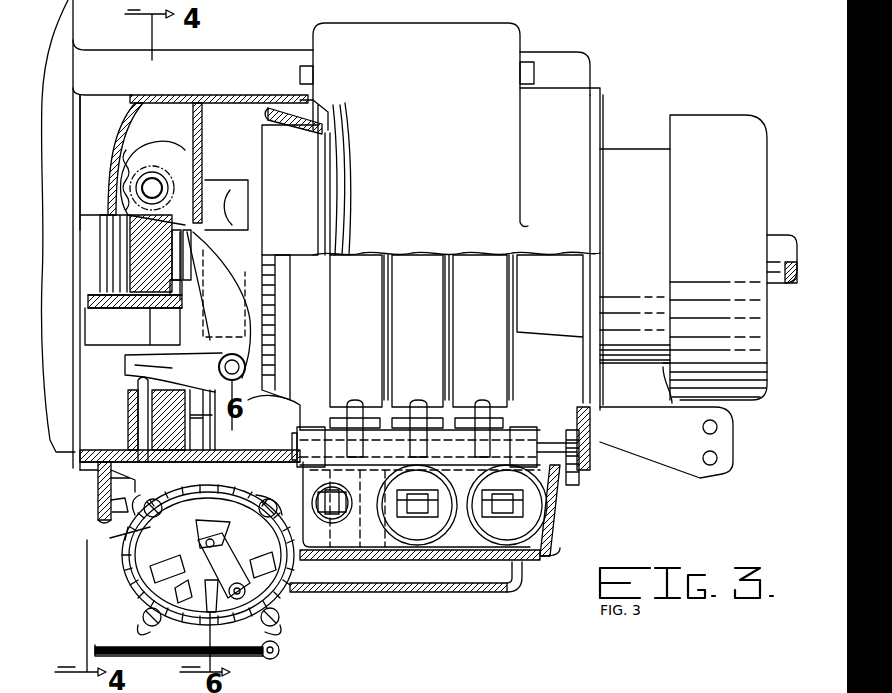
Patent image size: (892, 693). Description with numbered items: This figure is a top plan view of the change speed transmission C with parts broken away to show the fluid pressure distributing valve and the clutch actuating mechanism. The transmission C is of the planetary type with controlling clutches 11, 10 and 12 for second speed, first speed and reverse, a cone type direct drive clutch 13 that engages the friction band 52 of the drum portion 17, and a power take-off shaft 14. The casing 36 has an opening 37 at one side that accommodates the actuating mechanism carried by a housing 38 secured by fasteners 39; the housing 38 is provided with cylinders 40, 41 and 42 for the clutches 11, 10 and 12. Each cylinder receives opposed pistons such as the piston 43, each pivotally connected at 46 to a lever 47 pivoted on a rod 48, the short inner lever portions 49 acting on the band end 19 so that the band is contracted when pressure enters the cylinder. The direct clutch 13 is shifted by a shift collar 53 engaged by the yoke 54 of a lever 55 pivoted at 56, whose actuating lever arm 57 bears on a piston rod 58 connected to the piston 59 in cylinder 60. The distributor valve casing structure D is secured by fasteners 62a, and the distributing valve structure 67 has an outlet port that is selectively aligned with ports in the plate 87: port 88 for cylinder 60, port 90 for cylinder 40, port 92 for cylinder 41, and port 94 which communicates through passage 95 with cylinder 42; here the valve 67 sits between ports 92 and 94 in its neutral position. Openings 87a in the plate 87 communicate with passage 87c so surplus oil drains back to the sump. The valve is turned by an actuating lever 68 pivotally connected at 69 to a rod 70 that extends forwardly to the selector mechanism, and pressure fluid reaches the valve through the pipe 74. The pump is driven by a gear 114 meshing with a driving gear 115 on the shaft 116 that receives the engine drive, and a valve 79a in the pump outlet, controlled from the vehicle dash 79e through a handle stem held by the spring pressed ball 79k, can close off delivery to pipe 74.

The casing 36 is at (432, 45).
The change speed transmission C is at (505, 50).
The friction band 52 is at (280, 106).
The drum portion 17 is at (312, 108).
The gear 114 is at (130, 170).
The shaft 116 is at (168, 168).
The shift collar 53 is at (222, 180).
The controlling clutch 13 is at (296, 165).
The power take-off shaft 14 is at (780, 232).
The yoke 54 is at (218, 307).
The lever 55 is at (243, 282).
The controlling clutch 11 is at (345, 285).
The controlling clutch 10 is at (410, 278).
The controlling clutch 12 is at (470, 282).
The pivot 56 is at (245, 367).
The actuating lever arm 57 is at (132, 363).
The driving gear 115 is at (146, 312).
The piston rod 58 is at (137, 408).
The plate 87 is at (150, 570).
The passage 87c is at (204, 420).
The pipe 74 is at (266, 342).
The lever 47 is at (308, 462).
The rod 48 is at (290, 447).
The inner lever portion 49 is at (355, 400).
The band end 19 is at (430, 402).
The opening 37 is at (545, 445).
The cylinder 40 is at (320, 500).
The cylinder 41 is at (405, 512).
The fastener 39 is at (578, 478).
The cylinder 42 is at (560, 534).
The piston 43 is at (453, 524).
The housing 38 is at (530, 566).
The distributing valve structure 67 is at (368, 592).
The pivotal connection 46 is at (415, 592).
The port 94 is at (292, 595).
The passage 95 is at (514, 592).
The actuating lever 68 is at (300, 642).
The pivotal connection 69 is at (280, 651).
The piston 59 is at (105, 482).
The cylinder 60 is at (105, 505).
The opening 87a is at (110, 538).
The port 88 is at (150, 578).
The distributor valve casing structure D is at (150, 575).
The fastener 62a is at (148, 615).
The rod 70 is at (95, 650).
The valve 79a is at (0, 685).
The spring pressed ball 79k is at (38, 688).
The vehicle dash 79e is at (60, 690).
The port 92 is at (195, 628).
The port 90 is at (201, 559).